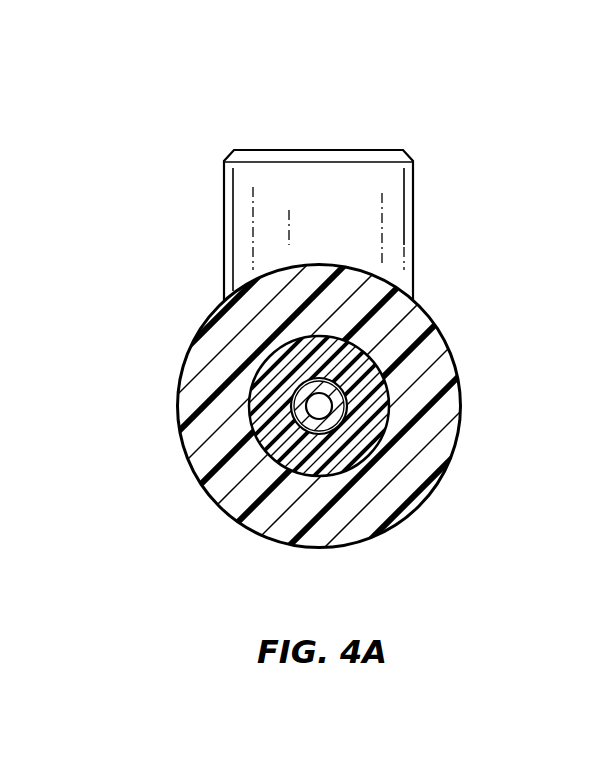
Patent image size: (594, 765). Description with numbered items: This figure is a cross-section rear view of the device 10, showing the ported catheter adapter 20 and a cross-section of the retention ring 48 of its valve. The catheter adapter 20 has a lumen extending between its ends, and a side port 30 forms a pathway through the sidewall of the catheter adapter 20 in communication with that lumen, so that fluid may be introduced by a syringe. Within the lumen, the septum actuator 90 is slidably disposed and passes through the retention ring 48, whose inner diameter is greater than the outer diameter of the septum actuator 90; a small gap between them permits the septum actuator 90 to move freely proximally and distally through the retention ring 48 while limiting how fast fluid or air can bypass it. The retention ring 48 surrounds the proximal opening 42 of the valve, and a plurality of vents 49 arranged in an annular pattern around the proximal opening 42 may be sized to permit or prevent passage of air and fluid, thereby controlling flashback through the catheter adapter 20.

The device 10 is at (470, 175).
The side port 30 is at (233, 194).
The septum actuator 90 is at (433, 322).
The ported catheter adapter 20 is at (355, 360).
The retention ring 48 is at (378, 438).
The proximal opening 42 is at (358, 490).
The vents 49 is at (278, 430).